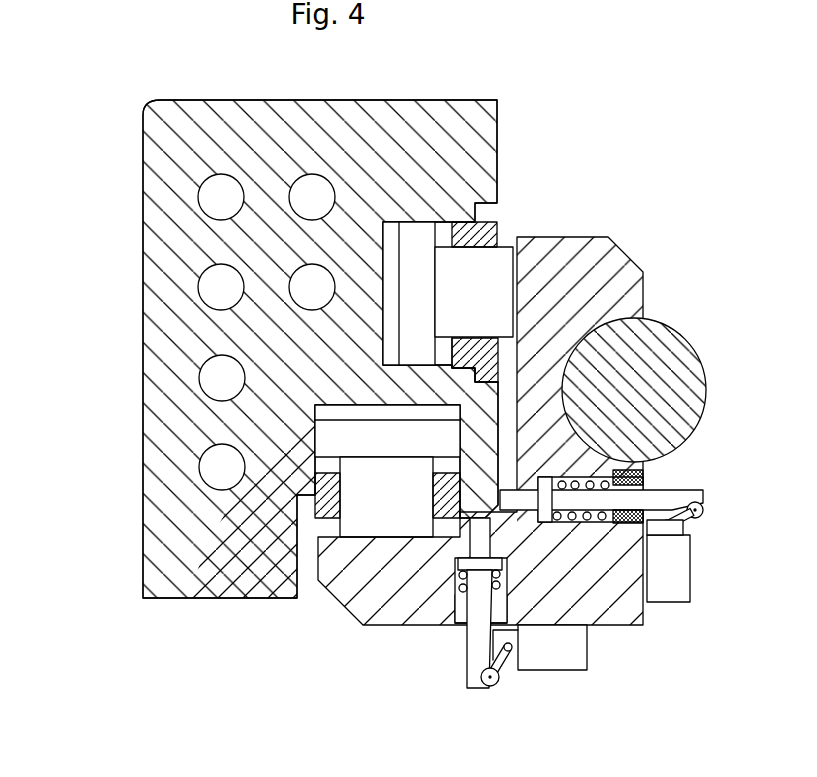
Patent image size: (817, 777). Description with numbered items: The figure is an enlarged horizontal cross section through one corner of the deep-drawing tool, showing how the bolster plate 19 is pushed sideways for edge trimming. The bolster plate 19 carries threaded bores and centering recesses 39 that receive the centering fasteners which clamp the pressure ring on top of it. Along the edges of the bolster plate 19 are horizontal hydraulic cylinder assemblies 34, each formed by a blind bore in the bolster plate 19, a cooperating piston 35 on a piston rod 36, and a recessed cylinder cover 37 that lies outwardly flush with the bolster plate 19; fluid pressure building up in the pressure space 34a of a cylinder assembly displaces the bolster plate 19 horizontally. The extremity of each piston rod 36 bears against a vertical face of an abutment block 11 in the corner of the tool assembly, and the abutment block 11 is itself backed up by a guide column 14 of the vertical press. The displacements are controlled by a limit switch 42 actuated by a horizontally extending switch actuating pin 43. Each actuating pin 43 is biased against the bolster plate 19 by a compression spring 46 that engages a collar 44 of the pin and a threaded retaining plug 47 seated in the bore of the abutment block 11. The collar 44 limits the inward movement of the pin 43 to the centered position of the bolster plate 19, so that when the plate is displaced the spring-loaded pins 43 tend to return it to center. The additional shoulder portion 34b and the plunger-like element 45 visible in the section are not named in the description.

The abutment block 11 is at (610, 268).
The guide column 14 is at (680, 368).
The bolster plate 19 is at (407, 135).
The horizontal hydraulic cylinder assembly 34 is at (393, 218).
The pressure space 34a is at (390, 345).
The sleeve flange 34b is at (440, 355).
The piston 35 is at (418, 240).
The piston rod 36 is at (492, 268).
The recessed cylinder cover 37 is at (483, 223).
The threaded bores and centering recesses 39 is at (220, 470).
The limit switch 42 is at (672, 567).
The switch actuating pin 43 is at (667, 497).
The collar 44 is at (587, 513).
The plunger 45 is at (523, 527).
The compression spring 46 is at (647, 622).
The threaded retaining plug 47 is at (647, 468).